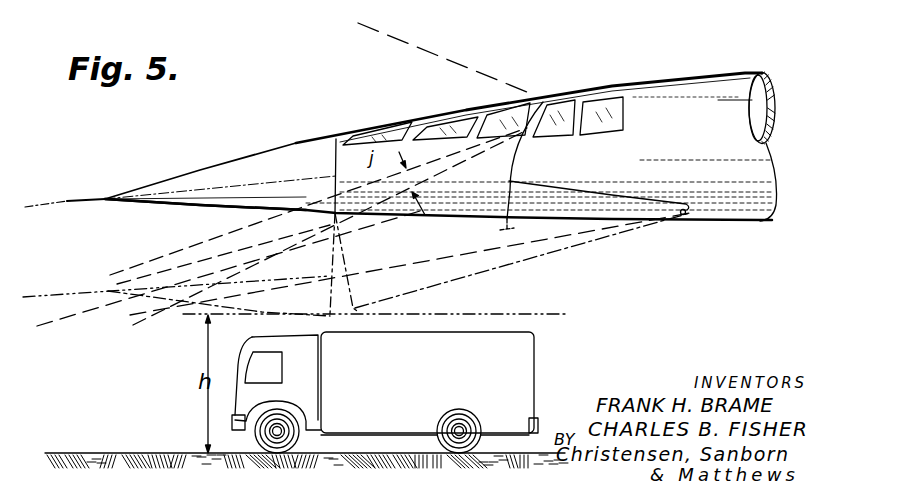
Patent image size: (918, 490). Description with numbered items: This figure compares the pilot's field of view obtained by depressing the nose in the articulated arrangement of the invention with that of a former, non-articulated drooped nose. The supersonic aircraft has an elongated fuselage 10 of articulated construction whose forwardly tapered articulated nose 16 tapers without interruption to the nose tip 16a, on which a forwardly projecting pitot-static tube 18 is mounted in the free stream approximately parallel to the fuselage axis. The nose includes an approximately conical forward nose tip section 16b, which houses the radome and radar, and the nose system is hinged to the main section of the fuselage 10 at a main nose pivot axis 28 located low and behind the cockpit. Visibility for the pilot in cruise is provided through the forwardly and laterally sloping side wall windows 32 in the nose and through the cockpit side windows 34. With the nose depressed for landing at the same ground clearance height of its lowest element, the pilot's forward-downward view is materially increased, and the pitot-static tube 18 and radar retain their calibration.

The fuselage 10 is at (672, 76).
The articulated nose 16 is at (254, 150).
The nose tip 16a is at (108, 198).
The forward nose tip section 16b is at (163, 205).
The pitot-static tube 18 is at (78, 200).
The main nose pivot axis 28 is at (685, 216).
The side wall windows 32 is at (497, 117).
The cockpit side windows 34 is at (587, 107).